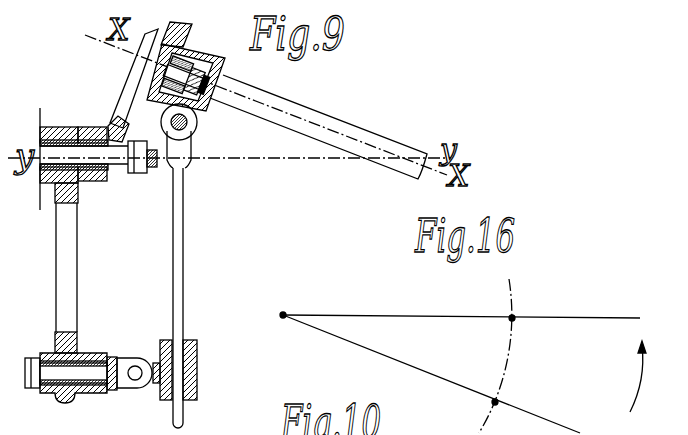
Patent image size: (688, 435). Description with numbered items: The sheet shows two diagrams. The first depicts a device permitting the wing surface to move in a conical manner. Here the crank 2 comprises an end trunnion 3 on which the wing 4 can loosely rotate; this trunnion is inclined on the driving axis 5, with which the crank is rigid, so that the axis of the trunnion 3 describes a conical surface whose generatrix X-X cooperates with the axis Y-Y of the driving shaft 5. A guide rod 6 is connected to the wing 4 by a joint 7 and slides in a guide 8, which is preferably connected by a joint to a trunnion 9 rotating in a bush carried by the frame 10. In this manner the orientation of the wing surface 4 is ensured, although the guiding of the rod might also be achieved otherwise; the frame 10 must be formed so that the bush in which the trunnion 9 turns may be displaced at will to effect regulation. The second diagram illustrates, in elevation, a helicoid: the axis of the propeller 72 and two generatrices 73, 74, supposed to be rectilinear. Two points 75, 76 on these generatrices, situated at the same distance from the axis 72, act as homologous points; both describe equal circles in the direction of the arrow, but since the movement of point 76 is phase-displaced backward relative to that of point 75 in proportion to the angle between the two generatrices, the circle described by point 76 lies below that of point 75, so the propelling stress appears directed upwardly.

In FIG. 9, the crank 2 is at (134, 85).
In FIG. 9, the end trunnion 3 is at (178, 53).
In FIG. 9, the wing 4 is at (333, 129).
In FIG. 9, the driving axis 5 is at (81, 128).
In FIG. 9, the guide rod 6 is at (177, 255).
In FIG. 9, the joint 7 is at (187, 127).
In FIG. 9, the guide 8 is at (197, 365).
In FIG. 9, the trunnion 9 is at (85, 372).
In FIG. 9, the frame 10 is at (67, 265).
In FIG. 16, the axis of the propeller 72 is at (280, 315).
In FIG. 16, the generatrix 73 is at (611, 304).
In FIG. 16, the generatrix 74 is at (580, 432).
In FIG. 16, the point on generatrix 75 is at (533, 303).
In FIG. 16, the point on generatrix 76 is at (517, 390).